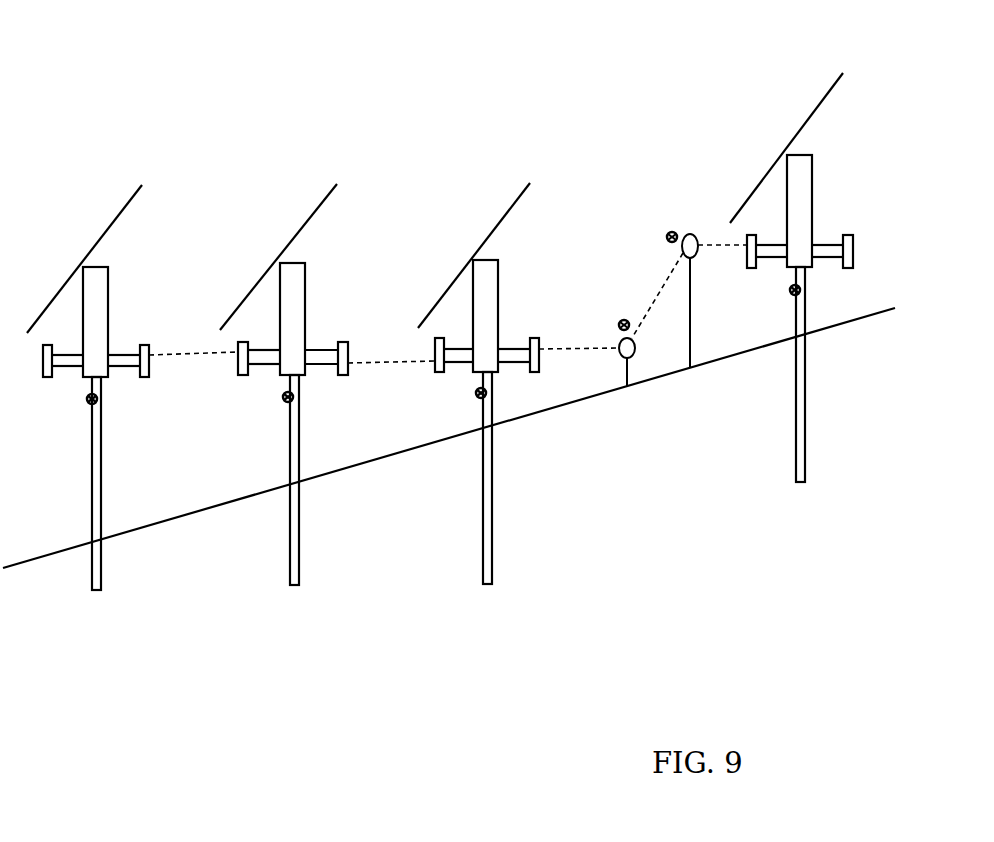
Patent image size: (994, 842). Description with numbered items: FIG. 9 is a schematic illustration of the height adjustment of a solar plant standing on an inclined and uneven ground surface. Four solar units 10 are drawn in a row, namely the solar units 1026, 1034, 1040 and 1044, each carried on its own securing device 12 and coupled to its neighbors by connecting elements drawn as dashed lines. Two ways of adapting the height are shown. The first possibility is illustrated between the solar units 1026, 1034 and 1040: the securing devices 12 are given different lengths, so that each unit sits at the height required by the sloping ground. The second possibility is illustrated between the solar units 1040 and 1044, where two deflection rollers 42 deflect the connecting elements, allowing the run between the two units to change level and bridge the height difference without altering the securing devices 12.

The solar unit 10 is at (440, 193).
The solar unit 1026 is at (88, 249).
The solar unit 1034 is at (284, 248).
The solar unit 1040 is at (478, 247).
The solar unit 1044 is at (791, 139).
The securing device 12 is at (86, 404).
The deflection roller 42 is at (623, 320).